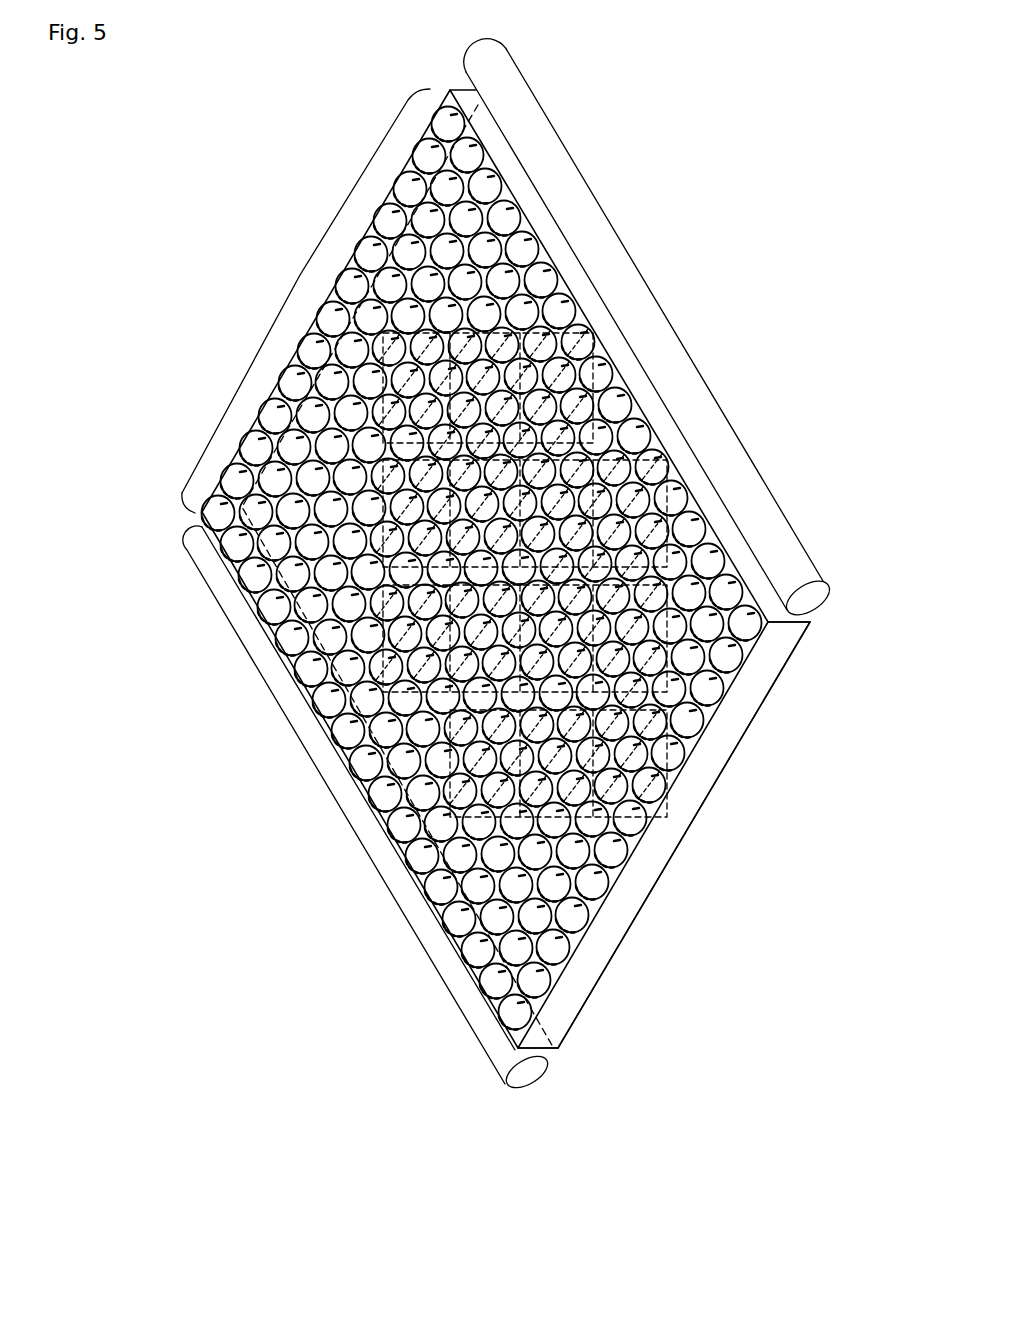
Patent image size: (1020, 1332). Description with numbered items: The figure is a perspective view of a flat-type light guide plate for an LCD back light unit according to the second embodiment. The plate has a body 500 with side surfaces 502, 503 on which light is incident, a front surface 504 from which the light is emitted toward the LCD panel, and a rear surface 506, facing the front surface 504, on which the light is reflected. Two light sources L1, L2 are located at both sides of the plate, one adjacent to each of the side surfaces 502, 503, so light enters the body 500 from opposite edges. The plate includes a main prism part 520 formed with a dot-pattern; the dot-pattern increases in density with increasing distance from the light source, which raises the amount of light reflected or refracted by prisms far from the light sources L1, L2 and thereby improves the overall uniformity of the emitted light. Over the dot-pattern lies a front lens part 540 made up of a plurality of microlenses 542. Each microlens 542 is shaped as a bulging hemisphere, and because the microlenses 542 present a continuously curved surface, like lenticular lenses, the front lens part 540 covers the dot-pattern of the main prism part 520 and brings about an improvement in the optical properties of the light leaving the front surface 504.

The body 500 is at (655, 857).
The side surface 502 is at (552, 1050).
The side surface 503 is at (793, 626).
The front surface 504 is at (272, 385).
The rear surface 506 is at (621, 940).
The main prism part 520 is at (673, 783).
The front lens part 540 is at (298, 280).
The microlens 542 is at (337, 283).
The light source L1 is at (520, 1075).
The light source L2 is at (808, 598).